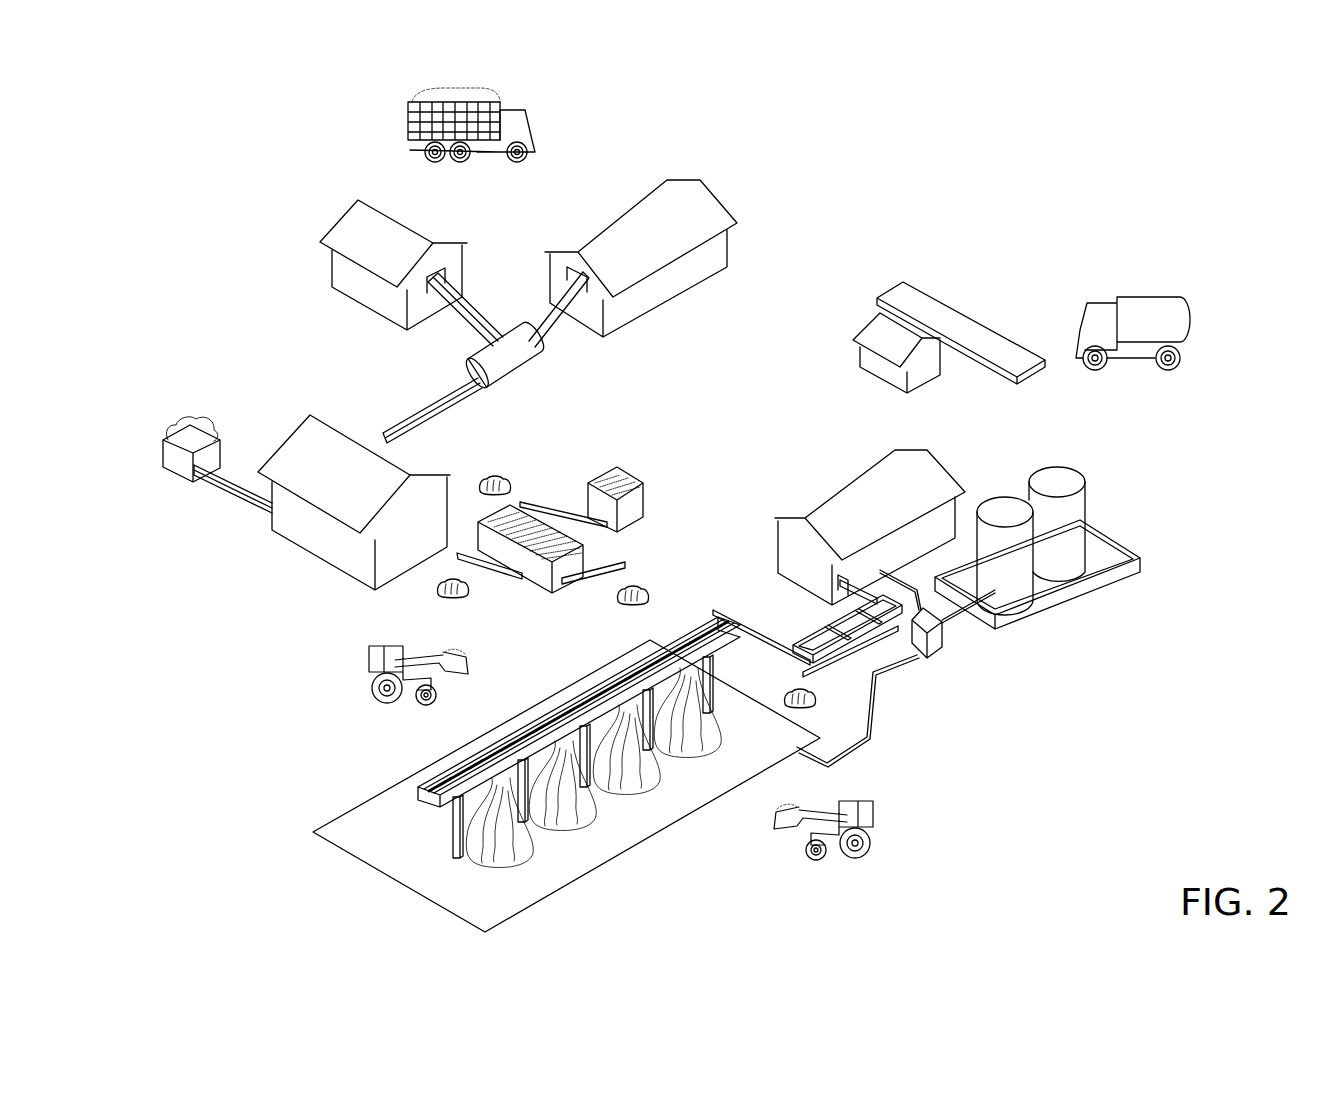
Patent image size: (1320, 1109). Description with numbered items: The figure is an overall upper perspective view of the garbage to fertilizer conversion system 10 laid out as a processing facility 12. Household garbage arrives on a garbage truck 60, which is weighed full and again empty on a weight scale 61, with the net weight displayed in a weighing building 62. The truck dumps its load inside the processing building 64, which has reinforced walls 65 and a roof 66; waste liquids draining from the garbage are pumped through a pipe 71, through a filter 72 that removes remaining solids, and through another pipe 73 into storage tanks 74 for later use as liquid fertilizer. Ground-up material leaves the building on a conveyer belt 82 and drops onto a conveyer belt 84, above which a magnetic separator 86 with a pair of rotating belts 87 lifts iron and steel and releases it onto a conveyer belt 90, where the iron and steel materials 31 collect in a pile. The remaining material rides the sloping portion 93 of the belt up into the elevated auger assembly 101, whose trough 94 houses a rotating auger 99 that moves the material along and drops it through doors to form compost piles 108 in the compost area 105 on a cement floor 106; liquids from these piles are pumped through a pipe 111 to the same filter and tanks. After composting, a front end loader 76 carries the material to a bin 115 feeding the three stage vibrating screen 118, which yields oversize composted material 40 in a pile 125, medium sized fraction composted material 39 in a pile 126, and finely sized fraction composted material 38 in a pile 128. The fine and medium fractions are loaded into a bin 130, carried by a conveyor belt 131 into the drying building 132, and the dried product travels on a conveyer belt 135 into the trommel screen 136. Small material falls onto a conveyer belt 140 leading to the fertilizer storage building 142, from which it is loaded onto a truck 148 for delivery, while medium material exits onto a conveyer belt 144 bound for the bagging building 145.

The garbage to fertilizer conversion system 10 is at (1118, 182).
The processing facility 12 is at (497, 220).
The truck 148 is at (515, 107).
The fertilizer storage building 142 is at (333, 217).
The bagging building 145 is at (730, 195).
The conveyer belt 140 is at (462, 337).
The conveyer belt 144 is at (560, 340).
The trommel screen 136 is at (520, 368).
The conveyer belt 135 is at (462, 402).
The drying building 132 is at (297, 433).
The bin 130 is at (182, 467).
The conveyor belt 131 is at (238, 497).
The medium sized fraction composted material 39 is at (200, 418).
The finely sized fraction composted material 38 is at (172, 433).
The three stage vibrating screen 118 is at (383, 570).
The pile 126 is at (435, 597).
The pile 125 is at (518, 500).
The oversize composted material 40 is at (495, 476).
The bin 115 is at (648, 498).
The pile 128 is at (620, 612).
The weighing building 62 is at (860, 318).
The weight scale 61 is at (955, 310).
The garbage truck 60 is at (1100, 303).
The processing building 64 is at (877, 455).
The roof 66 is at (925, 478).
The reinforced walls 65 is at (976, 500).
The storage tanks 74 is at (1062, 558).
The pipe 71 is at (880, 570).
The conveyer belt 82 is at (848, 578).
The magnetic separator 86 is at (812, 618).
The conveyer belt 84 is at (796, 628).
The sloping portion 93 is at (745, 638).
The filter 72 is at (940, 652).
The pipe 73 is at (955, 625).
The rotating belts 87 is at (900, 650).
The conveyer belt 90 is at (818, 700).
The iron and steel materials 31 is at (875, 715).
The pipe 111 is at (865, 750).
The front end loader 76 is at (873, 812).
The trough 94 is at (585, 687).
The rotating auger 99 is at (466, 768).
The auger assembly 101 is at (418, 779).
The compost area 105 is at (305, 815).
The cement floor 106 is at (400, 883).
The compost piles 108 is at (690, 770).